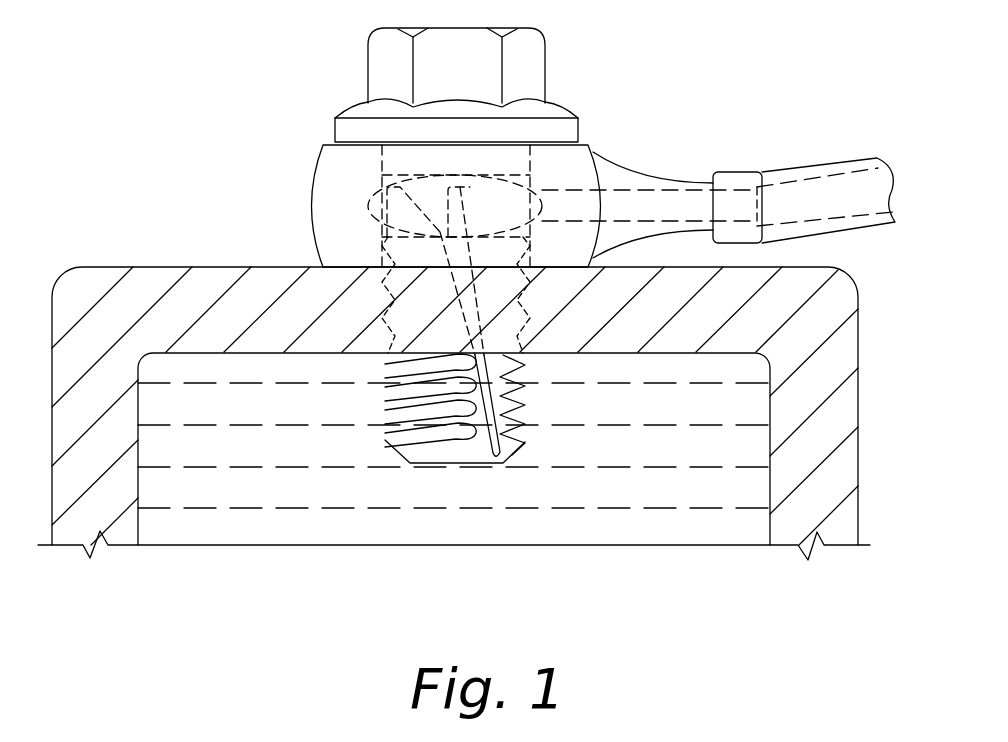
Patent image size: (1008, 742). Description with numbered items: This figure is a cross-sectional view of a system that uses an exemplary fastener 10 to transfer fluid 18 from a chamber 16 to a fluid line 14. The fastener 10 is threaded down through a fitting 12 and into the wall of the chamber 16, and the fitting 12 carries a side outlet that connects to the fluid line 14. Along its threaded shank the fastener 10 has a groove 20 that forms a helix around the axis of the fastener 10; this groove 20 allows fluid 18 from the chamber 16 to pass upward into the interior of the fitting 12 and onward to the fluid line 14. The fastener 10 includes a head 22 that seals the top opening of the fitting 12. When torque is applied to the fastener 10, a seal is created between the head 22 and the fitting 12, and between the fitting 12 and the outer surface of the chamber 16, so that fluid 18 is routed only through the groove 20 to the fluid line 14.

The fastener 10 is at (545, 73).
The fitting 12 is at (312, 205).
The fluid line 14 is at (790, 170).
The chamber 16 is at (173, 265).
The fluid 18 is at (292, 465).
The groove 20 is at (496, 455).
The head 22 is at (368, 70).